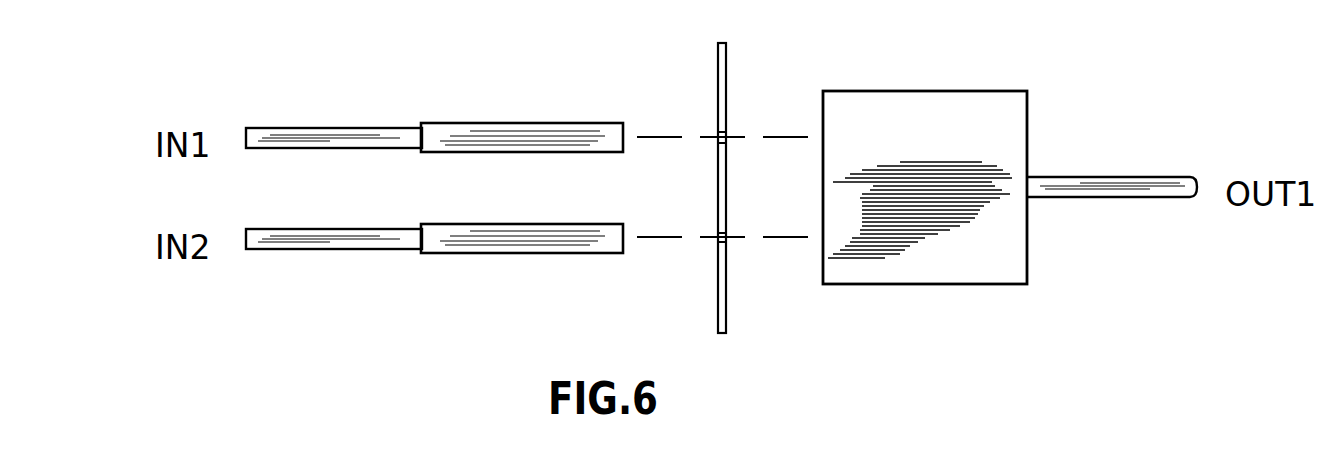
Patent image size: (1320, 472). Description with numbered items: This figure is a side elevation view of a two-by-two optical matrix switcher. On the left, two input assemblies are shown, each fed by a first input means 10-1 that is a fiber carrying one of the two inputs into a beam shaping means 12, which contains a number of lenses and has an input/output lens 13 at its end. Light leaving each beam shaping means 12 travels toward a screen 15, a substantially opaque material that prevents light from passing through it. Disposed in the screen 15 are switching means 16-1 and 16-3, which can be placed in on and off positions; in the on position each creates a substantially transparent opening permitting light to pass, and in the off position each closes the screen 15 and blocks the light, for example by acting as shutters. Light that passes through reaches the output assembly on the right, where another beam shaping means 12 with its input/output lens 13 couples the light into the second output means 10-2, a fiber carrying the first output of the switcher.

The first input means 10-1 is at (270, 125).
The second output means 10-2 is at (1120, 176).
The beam shaping means 12 is at (455, 121).
The input/output lens 13 is at (623, 136).
The screen 15 is at (729, 85).
The switching means 16-1 is at (727, 135).
The switching means 16-3 is at (727, 240).